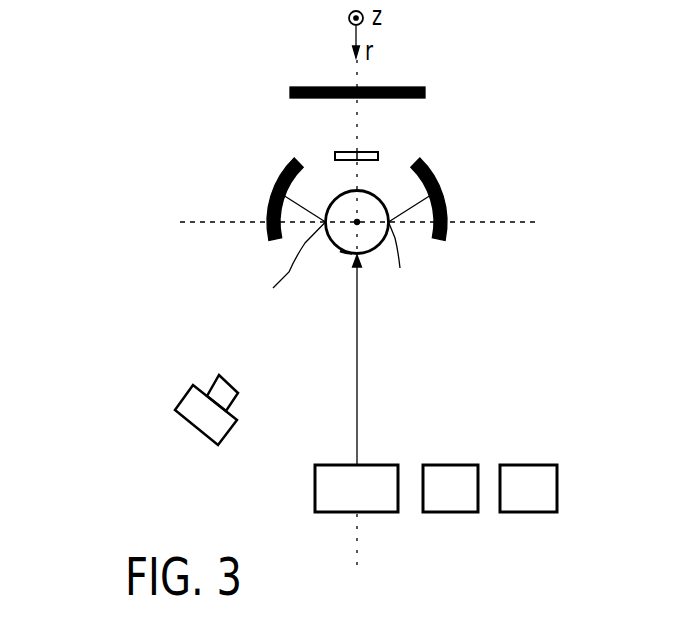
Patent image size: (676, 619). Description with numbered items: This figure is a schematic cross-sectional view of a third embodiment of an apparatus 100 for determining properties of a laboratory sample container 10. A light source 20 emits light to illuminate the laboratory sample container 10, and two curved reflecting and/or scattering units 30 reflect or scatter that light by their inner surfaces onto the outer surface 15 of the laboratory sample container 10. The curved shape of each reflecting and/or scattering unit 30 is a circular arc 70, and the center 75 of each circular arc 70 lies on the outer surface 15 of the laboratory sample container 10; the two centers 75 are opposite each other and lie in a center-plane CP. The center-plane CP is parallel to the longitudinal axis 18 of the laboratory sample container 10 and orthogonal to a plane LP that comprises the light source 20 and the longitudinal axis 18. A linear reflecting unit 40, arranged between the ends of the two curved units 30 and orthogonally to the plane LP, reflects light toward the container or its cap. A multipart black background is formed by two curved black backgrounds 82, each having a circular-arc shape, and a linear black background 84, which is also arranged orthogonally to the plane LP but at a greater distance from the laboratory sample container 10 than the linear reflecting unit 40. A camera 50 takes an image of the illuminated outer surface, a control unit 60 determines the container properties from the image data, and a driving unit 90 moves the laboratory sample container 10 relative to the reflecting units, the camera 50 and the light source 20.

The apparatus 100 is at (104, 101).
The linear black background 84 is at (330, 87).
The linear reflecting unit 40 is at (345, 151).
The circular arc 70 is at (304, 162).
The curved black background 82 is at (266, 208).
The laboratory sample container 10 is at (378, 272).
The outer surface 15 is at (357, 222).
The longitudinal axis 18 is at (346, 254).
The center 75 is at (336, 265).
The curved reflecting and/or scattering unit 30 is at (295, 230).
The light source 20 is at (371, 502).
The control unit 60 is at (464, 502).
The driving unit 90 is at (542, 502).
The camera 50 is at (194, 431).
The center-plane CP is at (513, 222).
The plane LP is at (360, 548).